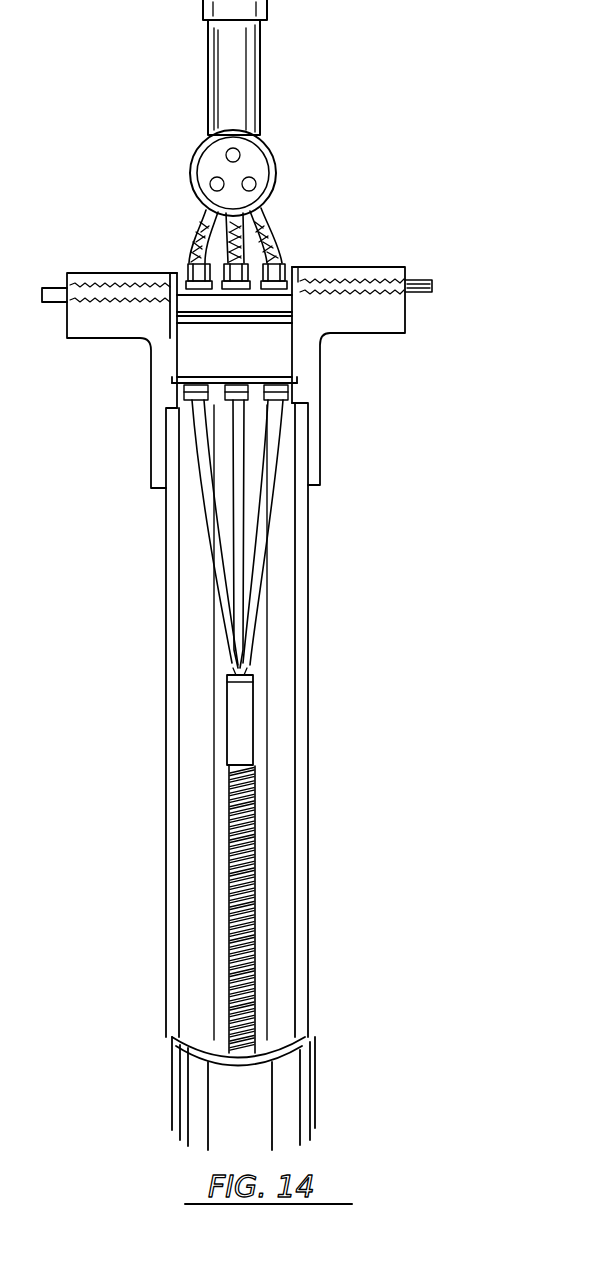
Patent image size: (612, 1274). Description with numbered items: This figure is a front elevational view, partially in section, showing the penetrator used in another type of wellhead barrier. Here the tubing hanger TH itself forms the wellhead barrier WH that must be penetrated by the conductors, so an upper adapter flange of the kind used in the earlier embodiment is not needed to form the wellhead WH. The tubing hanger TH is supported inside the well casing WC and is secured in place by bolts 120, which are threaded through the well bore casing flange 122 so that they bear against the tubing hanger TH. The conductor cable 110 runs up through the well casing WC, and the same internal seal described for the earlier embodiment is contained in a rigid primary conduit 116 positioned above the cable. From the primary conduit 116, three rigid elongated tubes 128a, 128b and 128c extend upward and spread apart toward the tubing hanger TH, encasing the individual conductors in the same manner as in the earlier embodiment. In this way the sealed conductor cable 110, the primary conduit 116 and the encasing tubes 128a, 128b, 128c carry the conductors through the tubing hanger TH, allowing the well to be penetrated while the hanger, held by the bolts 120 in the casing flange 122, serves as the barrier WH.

The wellhead barrier WH is at (413, 263).
The bolts 120 is at (432, 283).
The well bore casing flange 122 is at (390, 318).
The tubing hanger TH is at (275, 358).
The rigid elongated tube 128a is at (198, 485).
The rigid elongated tube 128b is at (238, 460).
The rigid elongated tube 128c is at (268, 502).
The well casing WC is at (308, 627).
The rigid primary conduit 116 is at (240, 722).
The conductor cable 110 is at (255, 893).